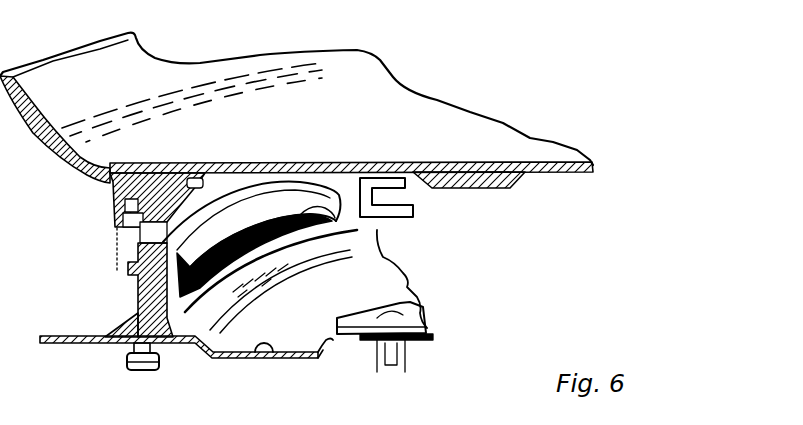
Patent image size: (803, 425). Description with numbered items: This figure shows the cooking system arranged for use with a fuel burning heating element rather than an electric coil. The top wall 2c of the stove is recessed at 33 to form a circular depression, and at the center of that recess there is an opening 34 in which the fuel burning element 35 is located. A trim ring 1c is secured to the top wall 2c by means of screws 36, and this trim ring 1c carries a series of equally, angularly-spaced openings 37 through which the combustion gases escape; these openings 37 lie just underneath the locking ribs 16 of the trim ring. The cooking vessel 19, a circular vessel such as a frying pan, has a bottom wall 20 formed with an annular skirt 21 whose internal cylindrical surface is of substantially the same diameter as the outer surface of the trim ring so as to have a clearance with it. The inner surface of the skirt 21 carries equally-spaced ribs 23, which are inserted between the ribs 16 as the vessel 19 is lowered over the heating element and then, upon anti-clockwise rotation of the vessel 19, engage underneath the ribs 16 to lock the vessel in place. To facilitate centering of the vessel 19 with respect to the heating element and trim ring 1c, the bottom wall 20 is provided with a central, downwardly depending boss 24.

The cooking vessel 19 is at (332, 65).
The bottom wall 20 is at (392, 168).
The annular skirt 21 is at (113, 182).
The ribs 23 is at (115, 233).
The ribs 16 is at (128, 268).
The trim ring 1c is at (123, 320).
The top wall 2c is at (43, 340).
The screws 36 is at (130, 367).
The recess 33 is at (268, 348).
The opening 34 is at (323, 340).
The fuel burning element 35 is at (413, 327).
The openings 37 is at (350, 230).
The boss 24 is at (465, 188).